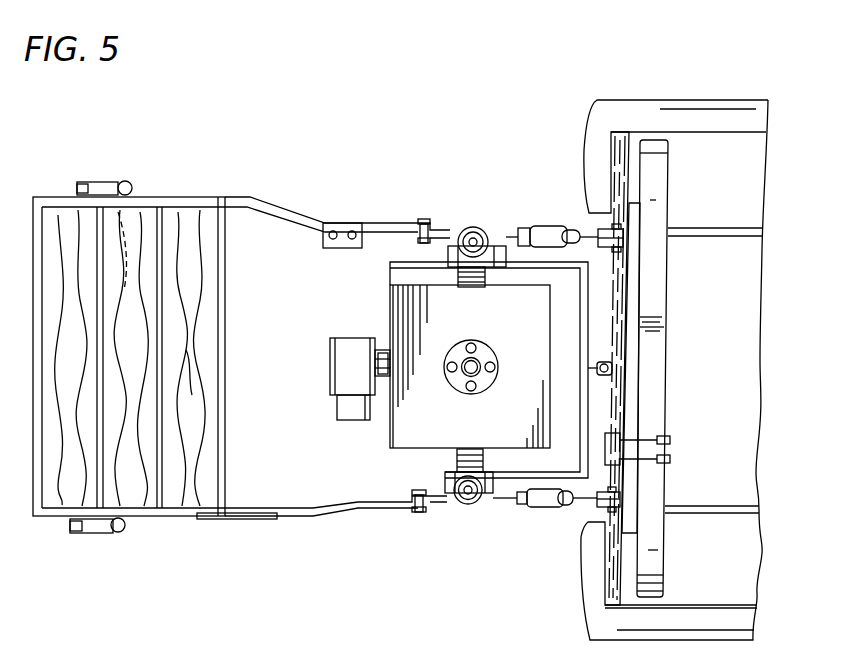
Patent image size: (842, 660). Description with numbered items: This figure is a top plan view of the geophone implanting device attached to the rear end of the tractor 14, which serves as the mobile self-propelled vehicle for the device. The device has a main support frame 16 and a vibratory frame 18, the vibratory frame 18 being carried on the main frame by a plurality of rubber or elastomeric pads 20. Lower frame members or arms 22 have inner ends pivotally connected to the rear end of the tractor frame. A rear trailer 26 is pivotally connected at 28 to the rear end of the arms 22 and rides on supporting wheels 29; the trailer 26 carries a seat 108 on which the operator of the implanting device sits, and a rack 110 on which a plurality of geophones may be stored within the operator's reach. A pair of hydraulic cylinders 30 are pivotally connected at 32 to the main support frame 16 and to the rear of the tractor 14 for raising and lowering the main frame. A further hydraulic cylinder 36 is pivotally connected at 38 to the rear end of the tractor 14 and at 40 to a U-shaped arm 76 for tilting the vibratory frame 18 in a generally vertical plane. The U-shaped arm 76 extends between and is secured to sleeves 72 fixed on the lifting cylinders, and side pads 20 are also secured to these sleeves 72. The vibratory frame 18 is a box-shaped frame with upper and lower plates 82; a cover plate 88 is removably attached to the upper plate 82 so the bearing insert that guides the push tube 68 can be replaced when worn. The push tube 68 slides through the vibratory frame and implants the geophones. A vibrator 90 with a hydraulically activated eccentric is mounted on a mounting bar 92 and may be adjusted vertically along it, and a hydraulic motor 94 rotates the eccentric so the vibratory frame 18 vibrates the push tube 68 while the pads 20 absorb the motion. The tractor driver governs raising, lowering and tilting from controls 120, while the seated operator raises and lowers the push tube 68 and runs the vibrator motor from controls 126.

The tractor 14 is at (768, 131).
The main support frame 16 is at (444, 482).
The vibratory frame 18 is at (389, 442).
The rubber or elastomeric pads 20 is at (507, 264).
The lower frame members or arms 22 is at (455, 232).
The rear trailer 26 is at (177, 528).
The pivotal connection 28 is at (425, 218).
The supporting wheels 29 is at (110, 183).
The hydraulic cylinders 30 is at (548, 227).
The pivotal connection 32 is at (615, 252).
The hydraulic cylinder 36 is at (617, 377).
The pivotal connection 38 is at (612, 368).
The pivotal connection 40 is at (595, 352).
The push member or tube 68 is at (485, 342).
The sleeves 72 is at (452, 252).
The U-shaped arm 76 is at (590, 312).
The upper and lower plates 82 is at (516, 424).
The cover plate 88 is at (491, 357).
The vibrator 90 is at (330, 366).
The mounting bar 92 is at (386, 350).
The hydraulic motor 94 is at (342, 406).
The seat 108 is at (208, 305).
The rack 110 is at (253, 521).
The controls 120 is at (632, 428).
The controls 126 is at (345, 223).